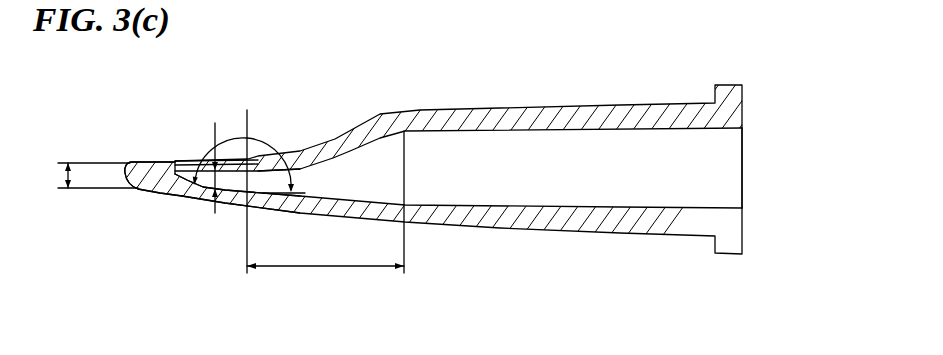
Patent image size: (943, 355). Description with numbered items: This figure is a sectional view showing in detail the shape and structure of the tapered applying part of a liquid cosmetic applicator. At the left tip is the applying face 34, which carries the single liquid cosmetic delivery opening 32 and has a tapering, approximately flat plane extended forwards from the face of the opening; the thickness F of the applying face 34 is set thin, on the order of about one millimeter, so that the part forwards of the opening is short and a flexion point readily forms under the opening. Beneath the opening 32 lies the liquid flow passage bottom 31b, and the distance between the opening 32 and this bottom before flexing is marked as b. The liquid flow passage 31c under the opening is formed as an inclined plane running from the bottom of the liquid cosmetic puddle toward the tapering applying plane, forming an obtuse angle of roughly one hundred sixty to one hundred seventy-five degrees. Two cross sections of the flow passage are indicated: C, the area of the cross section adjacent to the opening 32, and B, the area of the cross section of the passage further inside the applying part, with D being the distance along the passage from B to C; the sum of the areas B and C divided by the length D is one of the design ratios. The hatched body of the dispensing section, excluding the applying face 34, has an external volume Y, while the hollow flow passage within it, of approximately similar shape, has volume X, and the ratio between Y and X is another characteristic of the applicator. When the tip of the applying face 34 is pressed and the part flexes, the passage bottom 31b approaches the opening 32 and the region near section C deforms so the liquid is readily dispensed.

The applying face 34 is at (147, 162).
The liquid cosmetic delivery opening 32 is at (193, 162).
The liquid flow passage under opening A 31c is at (187, 178).
The liquid flow passage bottom under opening A 31b is at (209, 194).
The distance between opening A and liquid flow passage bottom before flexing b is at (214, 156).
The cross-sectional area of the liquid flow passage adjacent to opening A C is at (260, 176).
The thickness of the applying face F is at (89, 175).
The distance of the liquid flow passage from B to C D is at (325, 191).
The cross-sectional area of the liquid flow passage inside the applying part B is at (405, 170).
The volume of the liquid flow passage X is at (568, 184).
The external volume of the dispensing part section Y is at (604, 239).